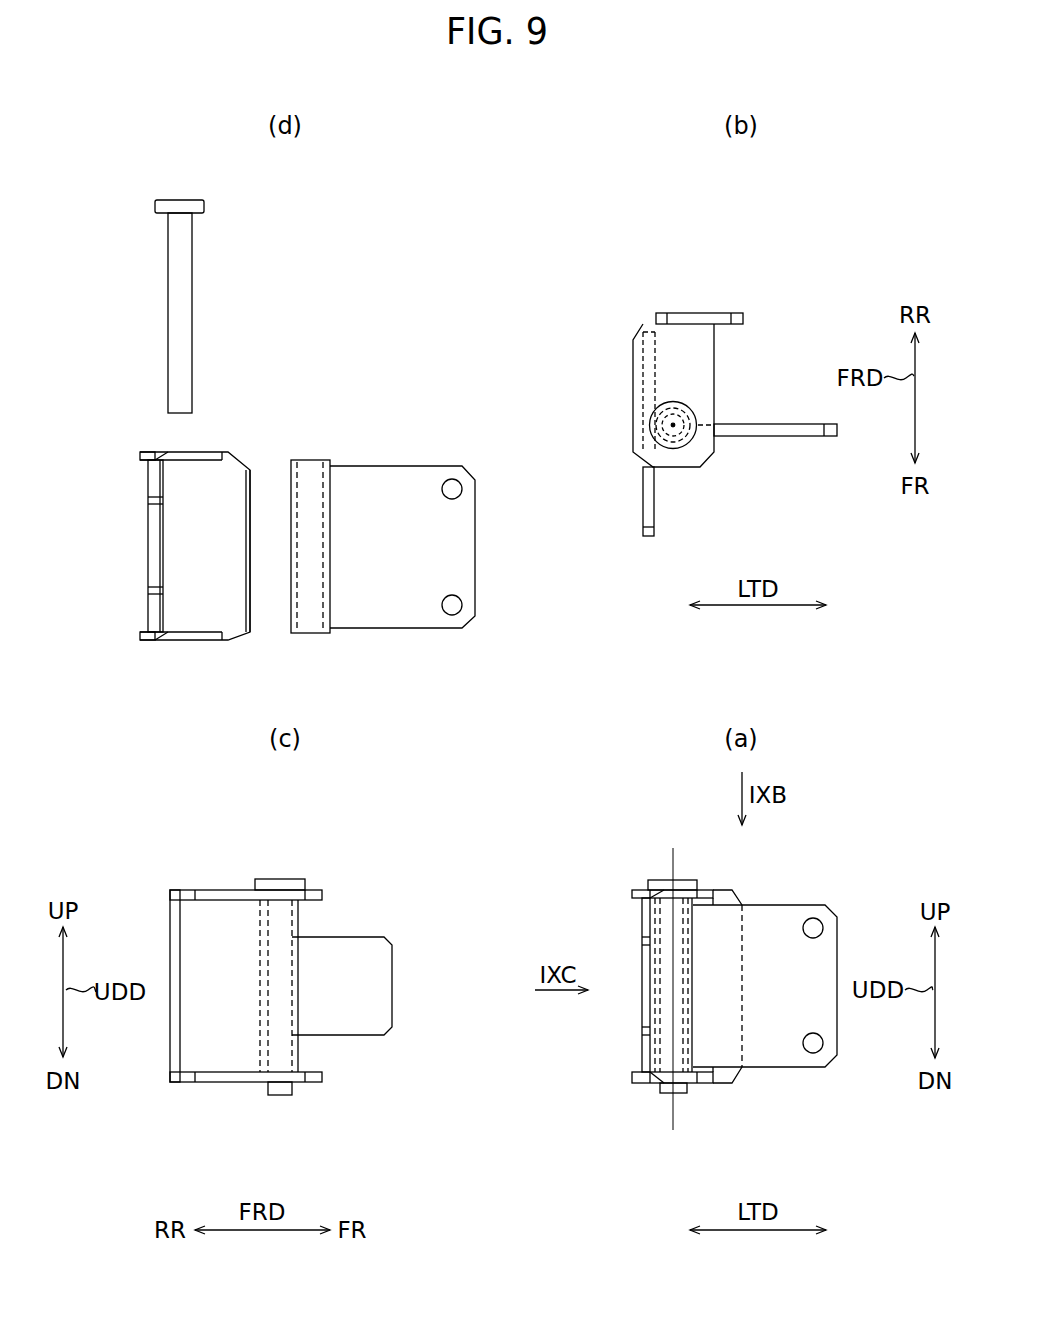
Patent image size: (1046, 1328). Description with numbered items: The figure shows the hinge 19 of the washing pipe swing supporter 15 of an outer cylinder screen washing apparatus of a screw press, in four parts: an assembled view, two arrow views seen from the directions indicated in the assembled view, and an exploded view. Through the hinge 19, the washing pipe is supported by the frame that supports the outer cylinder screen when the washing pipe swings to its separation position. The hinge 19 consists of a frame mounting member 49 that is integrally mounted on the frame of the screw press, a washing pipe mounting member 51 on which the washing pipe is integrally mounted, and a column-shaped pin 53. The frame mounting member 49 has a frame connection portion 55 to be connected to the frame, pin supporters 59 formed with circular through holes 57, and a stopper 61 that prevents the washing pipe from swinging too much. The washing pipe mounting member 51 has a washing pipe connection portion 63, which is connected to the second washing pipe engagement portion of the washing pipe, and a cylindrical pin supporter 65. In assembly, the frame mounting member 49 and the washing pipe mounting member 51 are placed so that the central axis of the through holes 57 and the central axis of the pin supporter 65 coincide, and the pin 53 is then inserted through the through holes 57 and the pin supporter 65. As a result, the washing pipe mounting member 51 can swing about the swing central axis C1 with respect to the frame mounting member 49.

The washing pipe swing supporter 15 is at (663, 843).
The hinge 19 is at (735, 891).
The frame mounting member 49 is at (411, 667).
The washing pipe mounting member 51 is at (564, 770).
The pin 53 is at (193, 311).
The frame connection portion 55 is at (238, 622).
The through holes 57 is at (205, 450).
The pin supporters 59 is at (156, 452).
The stopper 61 is at (148, 538).
The washing pipe connection portion 63 is at (478, 549).
The pin supporter 65 is at (332, 549).
The swing central axis C1 is at (698, 420).